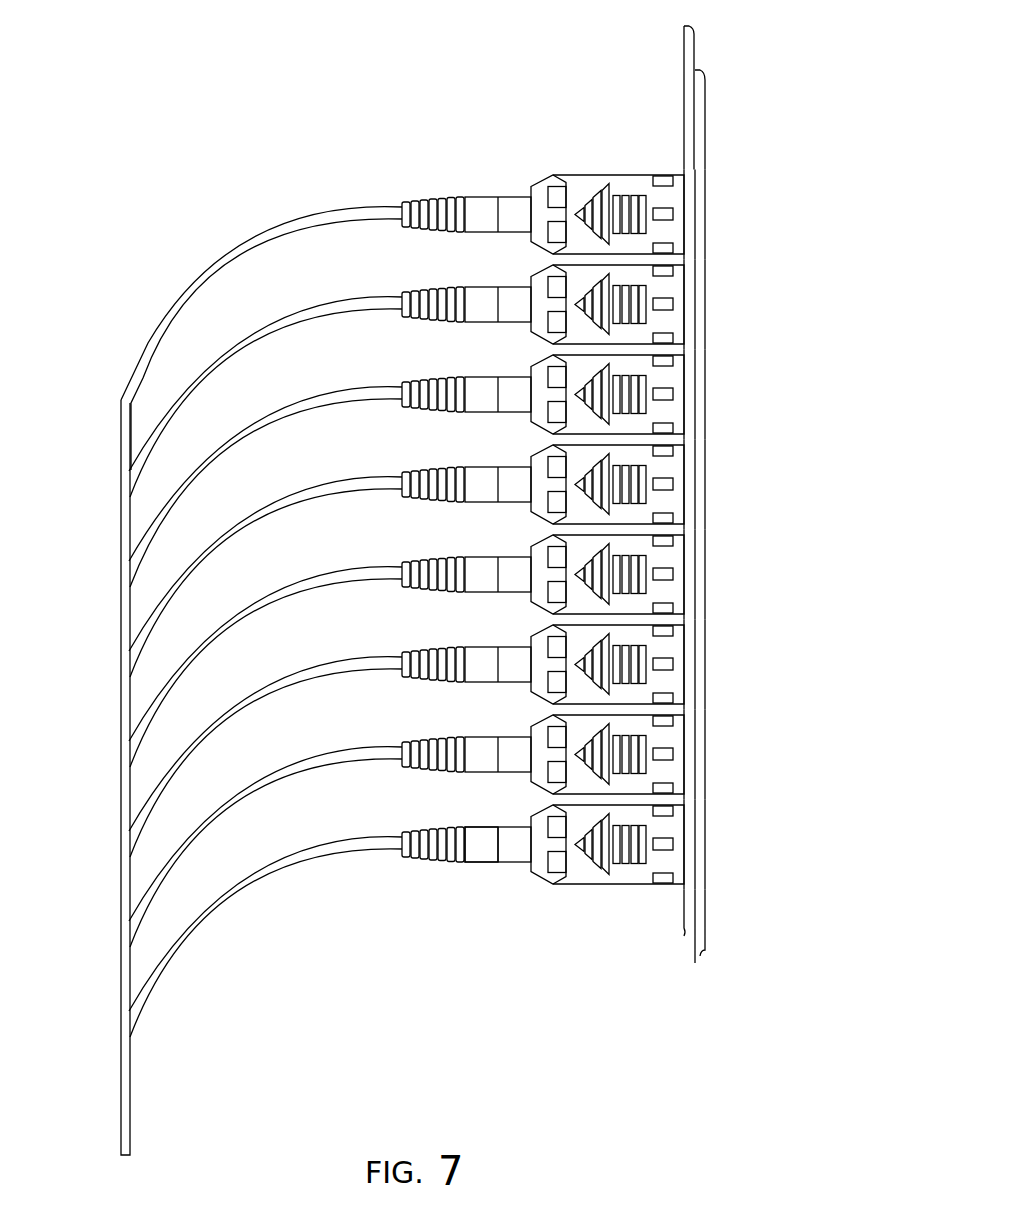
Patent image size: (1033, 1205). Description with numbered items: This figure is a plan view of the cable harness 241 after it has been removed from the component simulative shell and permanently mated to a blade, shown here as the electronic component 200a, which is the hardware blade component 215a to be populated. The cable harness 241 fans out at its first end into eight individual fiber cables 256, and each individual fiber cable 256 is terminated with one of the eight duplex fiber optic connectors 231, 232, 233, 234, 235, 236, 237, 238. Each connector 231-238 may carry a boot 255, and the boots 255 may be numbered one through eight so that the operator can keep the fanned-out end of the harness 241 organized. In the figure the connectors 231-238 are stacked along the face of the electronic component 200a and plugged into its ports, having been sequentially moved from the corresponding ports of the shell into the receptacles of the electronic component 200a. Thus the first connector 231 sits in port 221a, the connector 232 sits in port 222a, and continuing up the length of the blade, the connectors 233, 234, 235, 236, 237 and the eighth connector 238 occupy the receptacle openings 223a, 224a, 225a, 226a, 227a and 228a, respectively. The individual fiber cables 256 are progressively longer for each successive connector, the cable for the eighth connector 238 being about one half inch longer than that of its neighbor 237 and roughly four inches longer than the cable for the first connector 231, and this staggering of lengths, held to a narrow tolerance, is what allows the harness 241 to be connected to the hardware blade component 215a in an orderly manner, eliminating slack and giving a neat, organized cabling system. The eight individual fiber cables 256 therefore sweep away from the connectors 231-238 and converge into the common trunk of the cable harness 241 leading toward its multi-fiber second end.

The electronic component 200a is at (702, 115).
The hardware blade component 215a is at (698, 942).
The port 221a is at (695, 840).
The port 222a is at (695, 750).
The receptacle opening 223a is at (695, 660).
The receptacle opening 224a is at (695, 570).
The receptacle opening 225a is at (695, 480).
The receptacle opening 226a is at (695, 390).
The receptacle opening 227a is at (695, 300).
The receptacle opening 228a is at (695, 210).
The fiber optic connector 231 is at (632, 876).
The fiber optic connector 232 is at (632, 786).
The fiber optic connector 233 is at (632, 696).
The fiber optic connector 234 is at (632, 606).
The fiber optic connector 235 is at (632, 516).
The fiber optic connector 236 is at (632, 426).
The fiber optic connector 237 is at (632, 336).
The fiber optic connector 238 is at (632, 246).
The cable harness 241 is at (110, 580).
The boot 255 is at (482, 848).
The individual fiber cable 256 is at (327, 216).